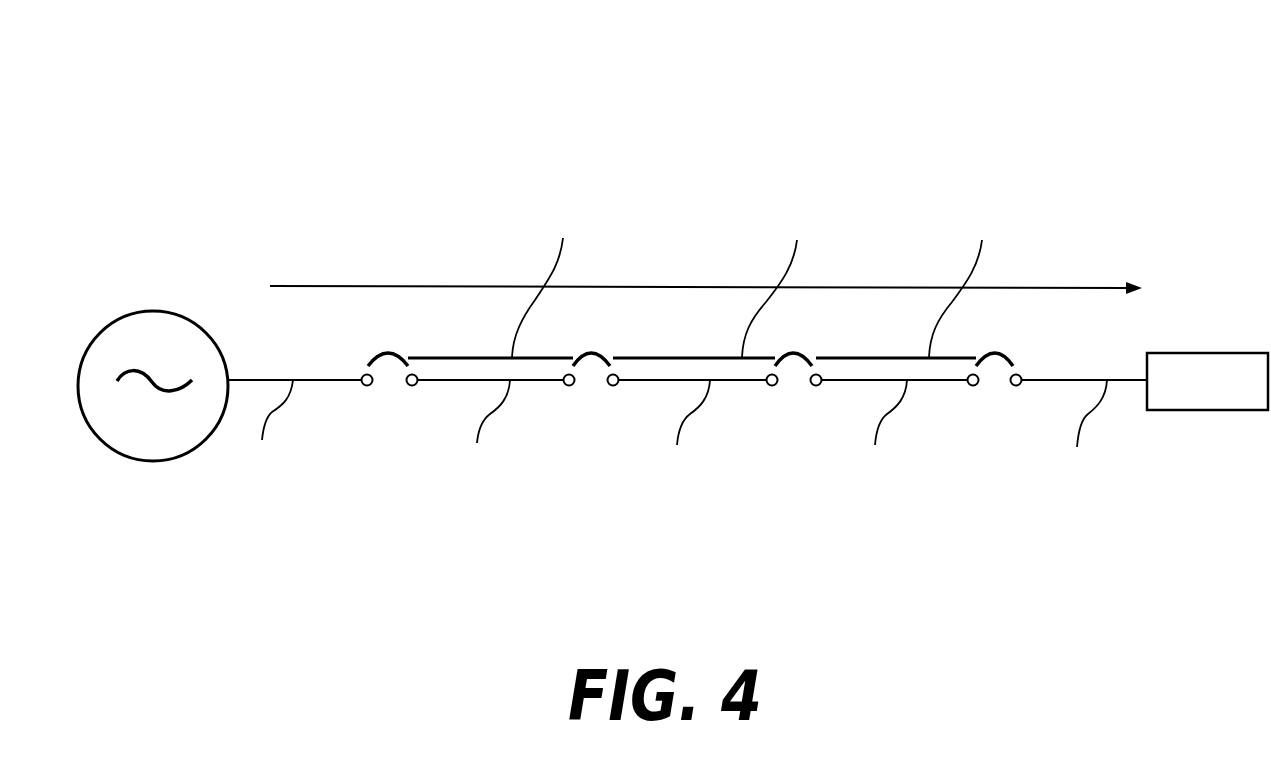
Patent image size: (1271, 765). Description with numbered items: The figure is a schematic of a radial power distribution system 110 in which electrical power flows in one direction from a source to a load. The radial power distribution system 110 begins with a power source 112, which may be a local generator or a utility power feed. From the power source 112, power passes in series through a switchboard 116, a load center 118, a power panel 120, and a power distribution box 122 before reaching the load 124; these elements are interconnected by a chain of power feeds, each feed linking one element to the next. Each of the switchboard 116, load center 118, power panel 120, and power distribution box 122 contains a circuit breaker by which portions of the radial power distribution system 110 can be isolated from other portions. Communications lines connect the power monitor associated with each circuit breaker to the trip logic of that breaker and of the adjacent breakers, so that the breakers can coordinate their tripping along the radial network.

The radial power distribution system 110 is at (653, 134).
The power source 112 is at (147, 270).
The switchboard 116 is at (425, 329).
The load center 118 is at (612, 329).
The power panel 120 is at (820, 329).
The power distribution box 122 is at (1025, 331).
The load 124 is at (1208, 352).